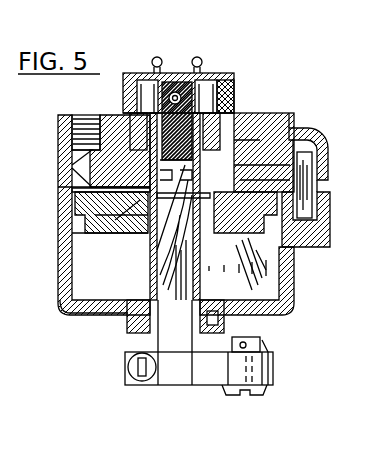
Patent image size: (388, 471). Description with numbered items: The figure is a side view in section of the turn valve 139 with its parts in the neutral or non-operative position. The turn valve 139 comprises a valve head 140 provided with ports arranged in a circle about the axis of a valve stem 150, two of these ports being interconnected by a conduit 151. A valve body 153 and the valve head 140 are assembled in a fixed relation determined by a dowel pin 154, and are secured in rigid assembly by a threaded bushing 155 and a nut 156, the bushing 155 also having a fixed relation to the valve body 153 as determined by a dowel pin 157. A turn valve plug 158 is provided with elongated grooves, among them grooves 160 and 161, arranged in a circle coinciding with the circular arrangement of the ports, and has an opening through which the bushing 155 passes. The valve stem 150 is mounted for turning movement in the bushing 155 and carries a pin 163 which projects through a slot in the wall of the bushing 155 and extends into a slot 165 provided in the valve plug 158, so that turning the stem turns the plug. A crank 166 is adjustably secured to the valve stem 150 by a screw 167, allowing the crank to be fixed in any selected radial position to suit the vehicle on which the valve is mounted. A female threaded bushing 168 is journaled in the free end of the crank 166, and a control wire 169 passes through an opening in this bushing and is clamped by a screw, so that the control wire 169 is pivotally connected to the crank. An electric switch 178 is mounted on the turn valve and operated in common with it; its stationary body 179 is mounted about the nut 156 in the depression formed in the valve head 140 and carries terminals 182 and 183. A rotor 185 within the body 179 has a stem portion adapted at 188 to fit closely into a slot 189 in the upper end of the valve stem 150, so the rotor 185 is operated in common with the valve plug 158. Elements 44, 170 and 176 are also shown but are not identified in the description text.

The notch 44 is at (58, 175).
The turn valve 139 is at (58, 120).
The valve head 140 is at (58, 138).
The valve stem 150 is at (113, 313).
The conduit 151 is at (58, 160).
The valve body 153 is at (294, 302).
The dowel pin 154 is at (307, 168).
The threaded bushing 155 is at (128, 335).
The nut 156 is at (125, 112).
The dowel pin 157 is at (227, 323).
The turn valve plug 158 is at (77, 202).
The elongated groove 160 is at (80, 230).
The elongated groove 161 is at (326, 212).
The pin 163 is at (143, 262).
The slot 165 is at (217, 222).
The crank 166 is at (207, 375).
The screw 167 is at (138, 368).
The female threaded bushing 168 is at (258, 343).
The control wire 169 is at (262, 357).
The tab 170 is at (233, 395).
The flange 176 is at (322, 237).
The electric switch 178 is at (232, 97).
The stationary body 179 is at (231, 80).
The terminal 182 is at (152, 62).
The terminal 183 is at (202, 62).
The rotor 185 is at (127, 88).
The fitting portion of stem 188 is at (114, 234).
The slot 189 is at (147, 237).